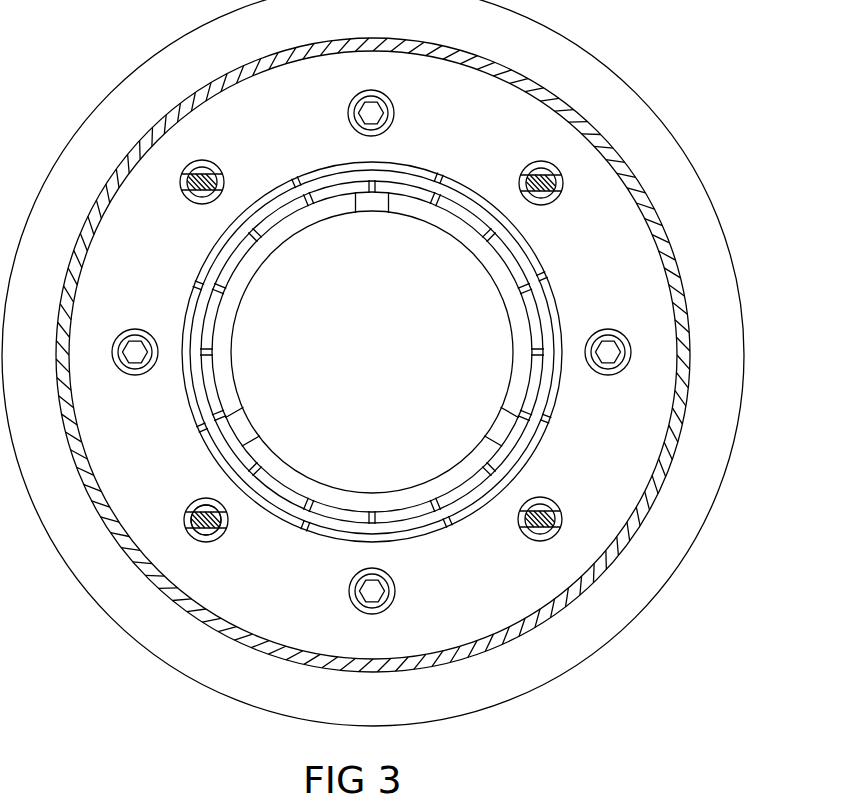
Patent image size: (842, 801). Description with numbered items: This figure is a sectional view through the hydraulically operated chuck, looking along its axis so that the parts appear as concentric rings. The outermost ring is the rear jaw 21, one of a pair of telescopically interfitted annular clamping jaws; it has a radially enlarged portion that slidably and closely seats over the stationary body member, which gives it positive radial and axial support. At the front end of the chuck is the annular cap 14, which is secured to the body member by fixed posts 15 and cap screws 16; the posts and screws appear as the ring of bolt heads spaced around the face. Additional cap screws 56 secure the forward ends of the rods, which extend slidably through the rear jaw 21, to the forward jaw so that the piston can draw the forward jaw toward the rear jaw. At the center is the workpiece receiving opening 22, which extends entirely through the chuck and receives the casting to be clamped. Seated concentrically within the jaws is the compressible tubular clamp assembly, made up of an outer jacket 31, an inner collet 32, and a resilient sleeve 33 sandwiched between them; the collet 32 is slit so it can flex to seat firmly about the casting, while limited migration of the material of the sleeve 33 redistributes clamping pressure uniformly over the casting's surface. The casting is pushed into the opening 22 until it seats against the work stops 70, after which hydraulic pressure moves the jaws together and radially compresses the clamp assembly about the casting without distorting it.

The annular cap 14 is at (478, 643).
The fixed posts 15 is at (218, 528).
The cap screws 16 is at (188, 506).
The rear jaw 21 is at (731, 246).
The central workpiece receiving opening 22 is at (416, 389).
The outer jacket 31 is at (190, 327).
The inner collet 32 is at (238, 268).
The resilient sleeve 33 is at (282, 205).
The cap screws 56 is at (390, 102).
The work stops 70 is at (243, 425).